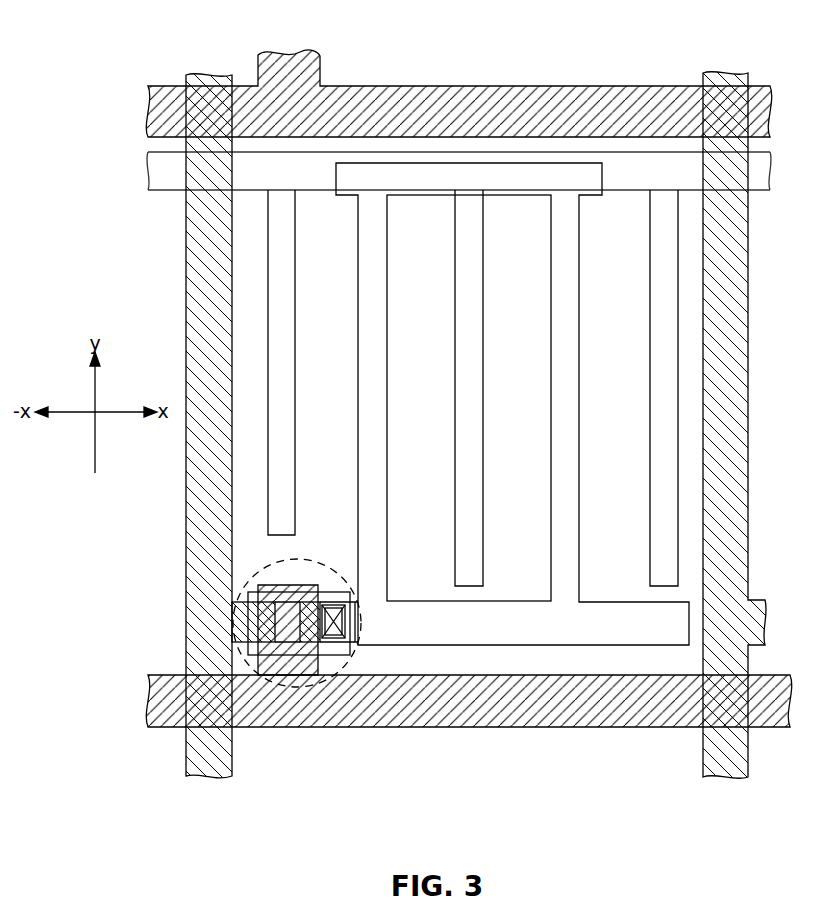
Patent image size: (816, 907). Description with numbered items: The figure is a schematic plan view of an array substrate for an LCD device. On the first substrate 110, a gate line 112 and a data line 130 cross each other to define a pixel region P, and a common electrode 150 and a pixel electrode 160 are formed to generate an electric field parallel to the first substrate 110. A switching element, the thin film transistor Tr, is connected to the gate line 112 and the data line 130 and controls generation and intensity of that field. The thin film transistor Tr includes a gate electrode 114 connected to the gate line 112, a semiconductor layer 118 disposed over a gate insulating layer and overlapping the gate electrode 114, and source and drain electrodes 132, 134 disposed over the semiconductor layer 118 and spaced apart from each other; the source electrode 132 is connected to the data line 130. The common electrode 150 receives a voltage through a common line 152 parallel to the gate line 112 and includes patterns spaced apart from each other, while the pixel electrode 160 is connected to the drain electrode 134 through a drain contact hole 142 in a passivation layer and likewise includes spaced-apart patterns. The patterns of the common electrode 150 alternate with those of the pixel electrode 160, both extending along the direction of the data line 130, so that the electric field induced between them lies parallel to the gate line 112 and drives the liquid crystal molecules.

The first substrate 110 is at (648, 757).
The gate line 112 is at (613, 718).
The gate electrode 114 is at (283, 649).
The semiconductor layer 118 is at (323, 604).
The data line 130 is at (198, 305).
The source electrode 132 is at (242, 621).
The drain electrode 134 is at (312, 632).
The drain contact hole 142 is at (352, 624).
The common electrode 150 is at (286, 400).
The common line 152 is at (382, 155).
The pixel electrode 160 is at (377, 502).
The thin film transistor Tr is at (303, 688).
The pixel region P is at (606, 236).